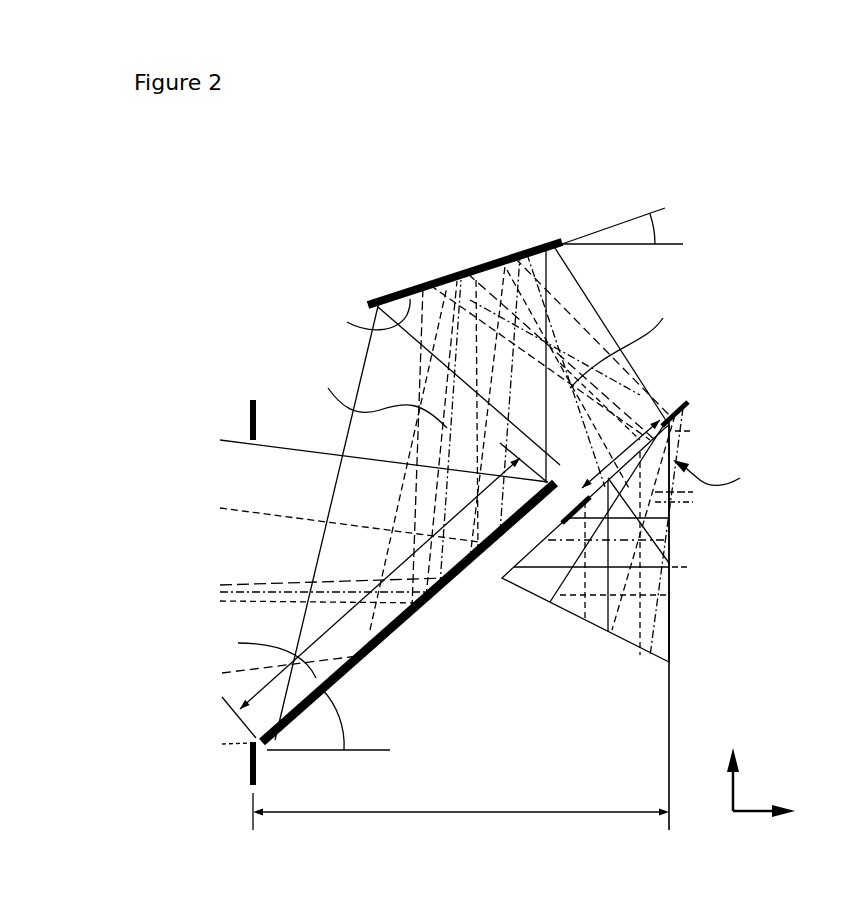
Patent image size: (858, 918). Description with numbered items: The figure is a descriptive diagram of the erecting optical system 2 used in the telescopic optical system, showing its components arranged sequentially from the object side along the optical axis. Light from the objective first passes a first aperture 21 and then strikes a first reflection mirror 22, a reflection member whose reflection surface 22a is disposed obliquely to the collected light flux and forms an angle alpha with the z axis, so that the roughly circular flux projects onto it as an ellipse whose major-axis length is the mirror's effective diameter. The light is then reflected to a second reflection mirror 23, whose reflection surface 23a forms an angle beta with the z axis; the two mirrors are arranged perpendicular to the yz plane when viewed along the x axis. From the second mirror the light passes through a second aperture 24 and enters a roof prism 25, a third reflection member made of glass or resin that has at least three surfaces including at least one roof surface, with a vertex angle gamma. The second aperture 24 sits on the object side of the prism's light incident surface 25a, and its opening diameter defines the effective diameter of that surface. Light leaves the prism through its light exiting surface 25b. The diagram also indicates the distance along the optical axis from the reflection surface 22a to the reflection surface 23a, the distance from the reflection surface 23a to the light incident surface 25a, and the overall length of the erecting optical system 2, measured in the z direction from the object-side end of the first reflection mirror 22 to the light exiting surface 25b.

The erecting optical system 2 is at (750, 166).
The first aperture 21 is at (253, 398).
The first reflection mirror 22 is at (393, 635).
The reflection surface 22a is at (277, 657).
The second reflection mirror 23 is at (550, 243).
The reflection surface 23a is at (354, 314).
The second aperture 24 is at (690, 400).
The roof prism 25 is at (655, 638).
The light incident surface 25a is at (537, 543).
The light exiting surface 25b is at (672, 617).